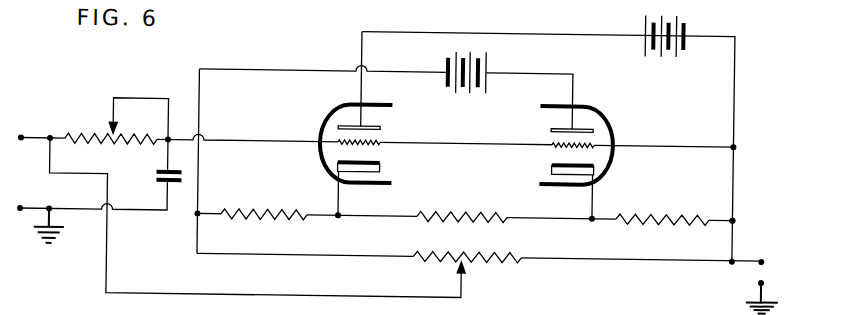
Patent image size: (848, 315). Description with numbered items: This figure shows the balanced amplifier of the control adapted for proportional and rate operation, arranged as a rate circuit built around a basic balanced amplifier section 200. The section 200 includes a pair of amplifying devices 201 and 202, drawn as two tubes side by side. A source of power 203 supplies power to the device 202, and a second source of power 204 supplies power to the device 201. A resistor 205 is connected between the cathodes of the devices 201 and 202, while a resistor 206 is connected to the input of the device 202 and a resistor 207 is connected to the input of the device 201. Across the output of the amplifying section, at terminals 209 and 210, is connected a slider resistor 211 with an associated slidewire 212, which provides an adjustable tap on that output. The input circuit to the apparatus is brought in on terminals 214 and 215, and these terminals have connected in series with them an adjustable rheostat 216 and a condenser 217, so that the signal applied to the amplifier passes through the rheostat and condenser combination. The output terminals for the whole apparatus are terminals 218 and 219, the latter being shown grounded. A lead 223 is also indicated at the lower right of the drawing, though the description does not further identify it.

The balanced amplifier section 200 is at (493, 149).
The amplifying device 201 is at (333, 107).
The amplifying device 202 is at (604, 112).
The source of power 203 is at (467, 49).
The source of power 204 is at (664, 12).
The resistor 205 is at (477, 206).
The resistor 206 is at (668, 204).
The resistor 207 is at (270, 203).
The terminal 209 is at (197, 212).
The terminal 210 is at (736, 210).
The slider resistor 211 is at (468, 247).
The slidewire 212 is at (468, 262).
The input terminal 214 is at (21, 134).
The input terminal 215 is at (21, 205).
The adjustable rheostat 216 is at (96, 127).
The condenser 217 is at (156, 171).
The output terminal 218 is at (764, 248).
The output terminal 219 is at (763, 273).
The connection lead 223 is at (658, 309).